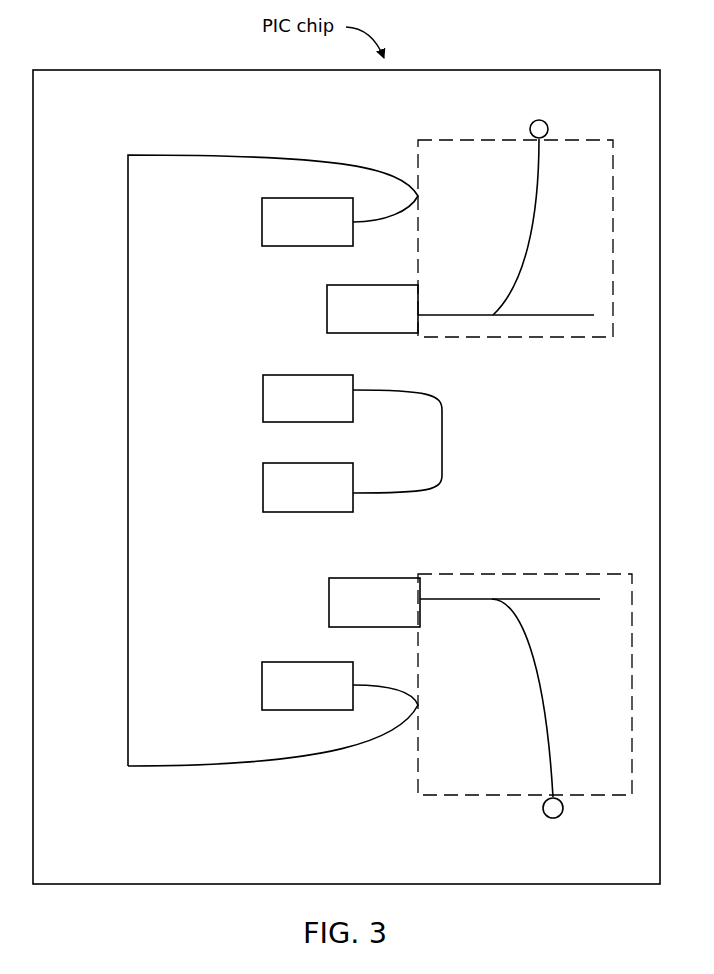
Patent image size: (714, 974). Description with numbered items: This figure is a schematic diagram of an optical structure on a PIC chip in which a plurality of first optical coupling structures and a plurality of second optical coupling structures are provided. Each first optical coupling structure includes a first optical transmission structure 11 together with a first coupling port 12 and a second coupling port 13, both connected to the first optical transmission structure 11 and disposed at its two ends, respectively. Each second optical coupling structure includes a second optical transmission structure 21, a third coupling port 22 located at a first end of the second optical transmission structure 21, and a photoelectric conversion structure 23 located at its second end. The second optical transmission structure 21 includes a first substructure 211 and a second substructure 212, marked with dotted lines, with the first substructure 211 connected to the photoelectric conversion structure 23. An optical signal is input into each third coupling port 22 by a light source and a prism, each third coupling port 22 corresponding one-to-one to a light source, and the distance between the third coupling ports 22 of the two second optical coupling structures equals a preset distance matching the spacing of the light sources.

The first optical transmission structure 11 is at (121, 406).
The first coupling port 12 is at (250, 220).
The second coupling port 13 is at (250, 496).
The second optical transmission structure 21 is at (603, 124).
The first substructure 211 is at (549, 178).
The second substructure 212 is at (533, 296).
The third coupling port 22 is at (313, 311).
The photoelectric conversion structure 23 is at (529, 120).